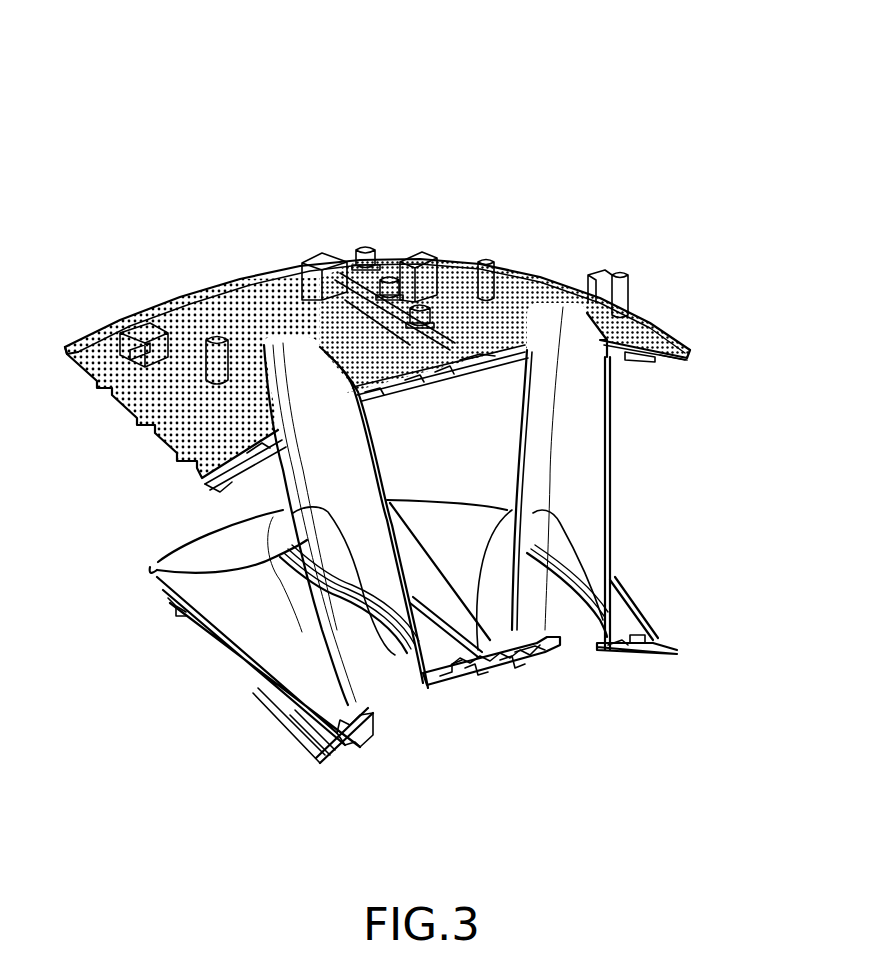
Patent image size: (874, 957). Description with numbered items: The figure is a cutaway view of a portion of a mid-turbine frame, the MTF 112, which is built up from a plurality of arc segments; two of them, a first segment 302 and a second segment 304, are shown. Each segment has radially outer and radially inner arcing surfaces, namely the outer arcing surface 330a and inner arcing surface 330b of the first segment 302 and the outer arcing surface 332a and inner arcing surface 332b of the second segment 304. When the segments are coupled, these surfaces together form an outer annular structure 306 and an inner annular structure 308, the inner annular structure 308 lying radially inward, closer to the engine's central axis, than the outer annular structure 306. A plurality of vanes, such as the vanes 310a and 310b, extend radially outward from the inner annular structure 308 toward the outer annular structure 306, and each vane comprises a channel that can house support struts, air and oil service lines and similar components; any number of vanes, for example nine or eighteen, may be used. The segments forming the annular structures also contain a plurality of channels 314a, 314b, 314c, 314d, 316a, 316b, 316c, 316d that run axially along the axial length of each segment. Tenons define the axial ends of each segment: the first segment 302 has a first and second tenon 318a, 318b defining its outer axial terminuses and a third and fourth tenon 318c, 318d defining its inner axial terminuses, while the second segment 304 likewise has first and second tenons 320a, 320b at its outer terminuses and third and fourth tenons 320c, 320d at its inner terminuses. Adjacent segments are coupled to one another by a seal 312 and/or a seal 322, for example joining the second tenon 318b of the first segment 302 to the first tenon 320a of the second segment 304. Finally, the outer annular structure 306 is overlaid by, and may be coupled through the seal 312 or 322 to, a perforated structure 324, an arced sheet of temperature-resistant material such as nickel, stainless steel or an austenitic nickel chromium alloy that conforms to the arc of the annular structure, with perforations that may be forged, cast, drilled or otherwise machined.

The MTF 112 is at (122, 110).
The first segment 302 is at (237, 270).
The second segment 304 is at (538, 272).
The outer annular structure 306 is at (442, 265).
The inner annular structure 308 is at (225, 657).
The vane 310a is at (150, 572).
The vane 310b is at (612, 498).
The seal 312 is at (350, 252).
The channel 314a is at (250, 460).
The channel 314b is at (382, 378).
The channel 314c is at (357, 735).
The channel 314d is at (447, 683).
The channel 316a is at (470, 355).
The channel 316b is at (650, 362).
The channel 316c is at (500, 657).
The channel 316d is at (623, 650).
The first tenon 318a is at (212, 480).
The second tenon 318b is at (418, 373).
The third tenon 318c is at (300, 710).
The fourth tenon 318d is at (467, 667).
The first tenon 320a is at (447, 365).
The second tenon 320b is at (680, 360).
The third tenon 320c is at (510, 660).
The fourth tenon 320d is at (647, 640).
The seal 322 is at (445, 605).
The perforated structure 324 is at (178, 300).
The outer arcing surface 330a is at (80, 337).
The inner arcing surface 330b is at (320, 765).
The outer arcing surface 332a is at (655, 350).
The inner arcing surface 332b is at (650, 648).